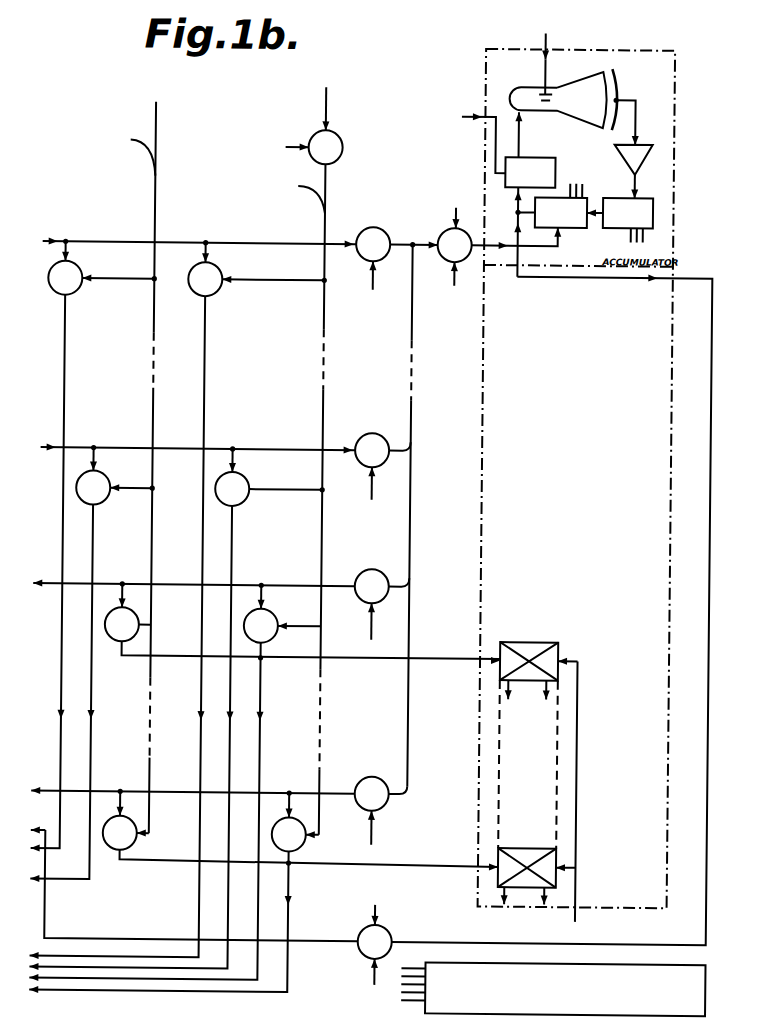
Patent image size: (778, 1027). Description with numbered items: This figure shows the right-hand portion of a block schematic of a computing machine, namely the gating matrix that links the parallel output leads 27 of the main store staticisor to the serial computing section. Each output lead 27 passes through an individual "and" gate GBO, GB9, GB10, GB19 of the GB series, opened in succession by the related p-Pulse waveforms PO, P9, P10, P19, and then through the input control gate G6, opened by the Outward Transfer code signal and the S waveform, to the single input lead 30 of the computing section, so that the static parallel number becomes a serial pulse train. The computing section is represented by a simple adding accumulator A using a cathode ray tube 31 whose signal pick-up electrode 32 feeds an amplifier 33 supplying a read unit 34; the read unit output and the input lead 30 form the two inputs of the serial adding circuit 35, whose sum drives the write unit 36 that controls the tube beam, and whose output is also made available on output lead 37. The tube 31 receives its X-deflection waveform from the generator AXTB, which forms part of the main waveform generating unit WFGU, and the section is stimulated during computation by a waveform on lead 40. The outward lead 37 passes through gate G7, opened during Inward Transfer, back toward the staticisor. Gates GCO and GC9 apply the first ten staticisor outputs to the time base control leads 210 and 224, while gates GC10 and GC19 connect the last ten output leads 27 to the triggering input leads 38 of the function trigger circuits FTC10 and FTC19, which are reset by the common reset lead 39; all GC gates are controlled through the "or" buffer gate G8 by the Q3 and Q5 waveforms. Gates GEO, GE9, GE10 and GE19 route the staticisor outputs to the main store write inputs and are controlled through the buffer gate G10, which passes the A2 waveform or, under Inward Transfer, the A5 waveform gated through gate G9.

The output leads 27 is at (58, 242).
The input lead 30 is at (493, 244).
The tube 31 is at (596, 80).
The signal pick-up electrode 32 is at (612, 78).
The amplifier 33 is at (612, 156).
The read unit 34 is at (622, 196).
The adding circuit 35 is at (568, 226).
The write unit 36 is at (544, 156).
The output lead 37 is at (44, 831).
The triggering input leads 38 is at (446, 654).
The common reset lead 39 is at (578, 884).
The lead 40 is at (480, 113).
The X-deflection control lead 210 is at (55, 852).
The Y-deflection control lead 224 is at (63, 886).
The accumulator A is at (590, 302).
The waveform generator AXTB is at (534, 38).
The Q5 waveform Q5 is at (161, 454).
The Q3 waveform Q3 is at (127, 151).
The or gate G8 is at (156, 174).
The and gate G9 is at (336, 150).
The A5 waveform A5 is at (282, 148).
The A2 waveform A2 is at (296, 195).
The or gate G10 is at (324, 210).
The and gate GCO is at (76, 290).
The and gate GEO is at (215, 293).
The and gate GBO is at (362, 260).
The p-Pulse waveform PO is at (373, 283).
The and gate GB9 is at (362, 437).
The p-Pulse waveform P9 is at (373, 491).
The and gate GC9 is at (98, 504).
The and gate GE9 is at (241, 507).
The and gate GB10 is at (364, 575).
The p-Pulse waveform P10 is at (373, 627).
The and gate GC10 is at (107, 668).
The and gate GE10 is at (269, 672).
The and gate GB19 is at (366, 782).
The p-Pulse waveform P19 is at (382, 828).
The and gate GC19 is at (106, 874).
The and gate GE19 is at (307, 855).
The and gate G7 is at (358, 936).
The input control gate G6 is at (436, 233).
The function trigger circuit FTC10 is at (530, 634).
The function trigger circuit FTC19 is at (524, 839).
The main waveform generating unit WFGU is at (553, 989).